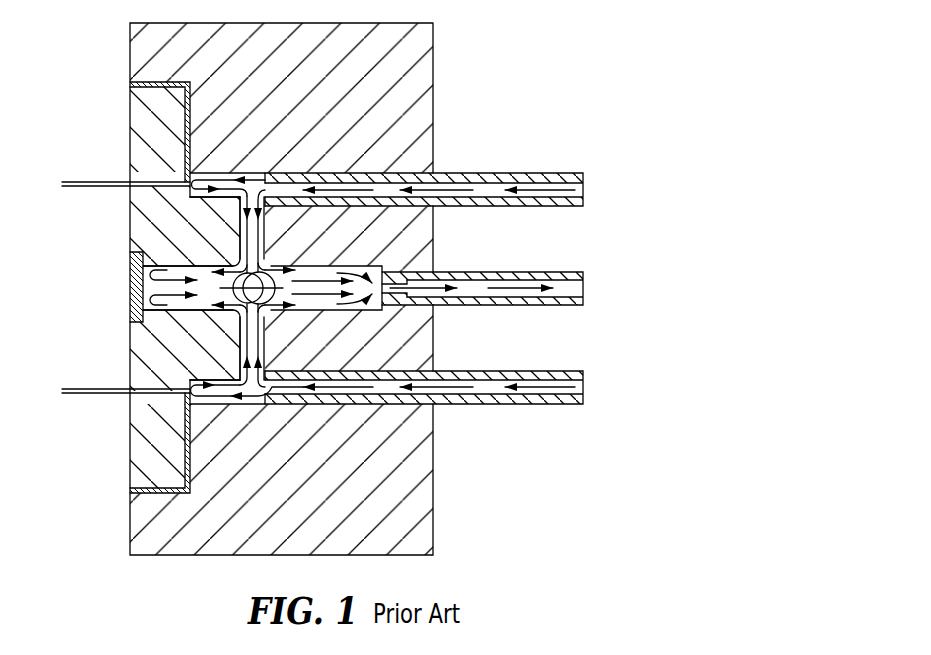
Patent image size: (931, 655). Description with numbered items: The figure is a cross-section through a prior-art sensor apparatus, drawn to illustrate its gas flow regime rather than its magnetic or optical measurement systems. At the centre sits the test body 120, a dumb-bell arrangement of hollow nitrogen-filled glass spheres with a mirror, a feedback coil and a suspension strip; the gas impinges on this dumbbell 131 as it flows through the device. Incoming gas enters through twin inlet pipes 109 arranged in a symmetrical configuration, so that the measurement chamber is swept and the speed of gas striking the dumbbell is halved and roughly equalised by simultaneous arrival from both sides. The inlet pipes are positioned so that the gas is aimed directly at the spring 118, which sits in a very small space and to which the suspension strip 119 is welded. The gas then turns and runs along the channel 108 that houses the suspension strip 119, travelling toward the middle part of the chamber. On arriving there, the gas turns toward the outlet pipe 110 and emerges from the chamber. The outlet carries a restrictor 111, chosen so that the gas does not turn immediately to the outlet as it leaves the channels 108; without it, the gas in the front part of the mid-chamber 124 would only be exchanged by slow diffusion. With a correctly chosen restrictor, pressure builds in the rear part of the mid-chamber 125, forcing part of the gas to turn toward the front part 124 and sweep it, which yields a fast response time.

The channel 108 is at (247, 244).
The inlet pipes 109 is at (517, 172).
The outlet pipe 110 is at (542, 271).
The restrictor 111 is at (405, 298).
The spring 118 is at (221, 186).
The suspension strip 119 is at (247, 232).
The test body 120 is at (265, 300).
The front part of the mid-chamber 124 is at (153, 288).
The rear part of the mid-chamber 125 is at (368, 263).
The dumbbell 131 is at (261, 276).